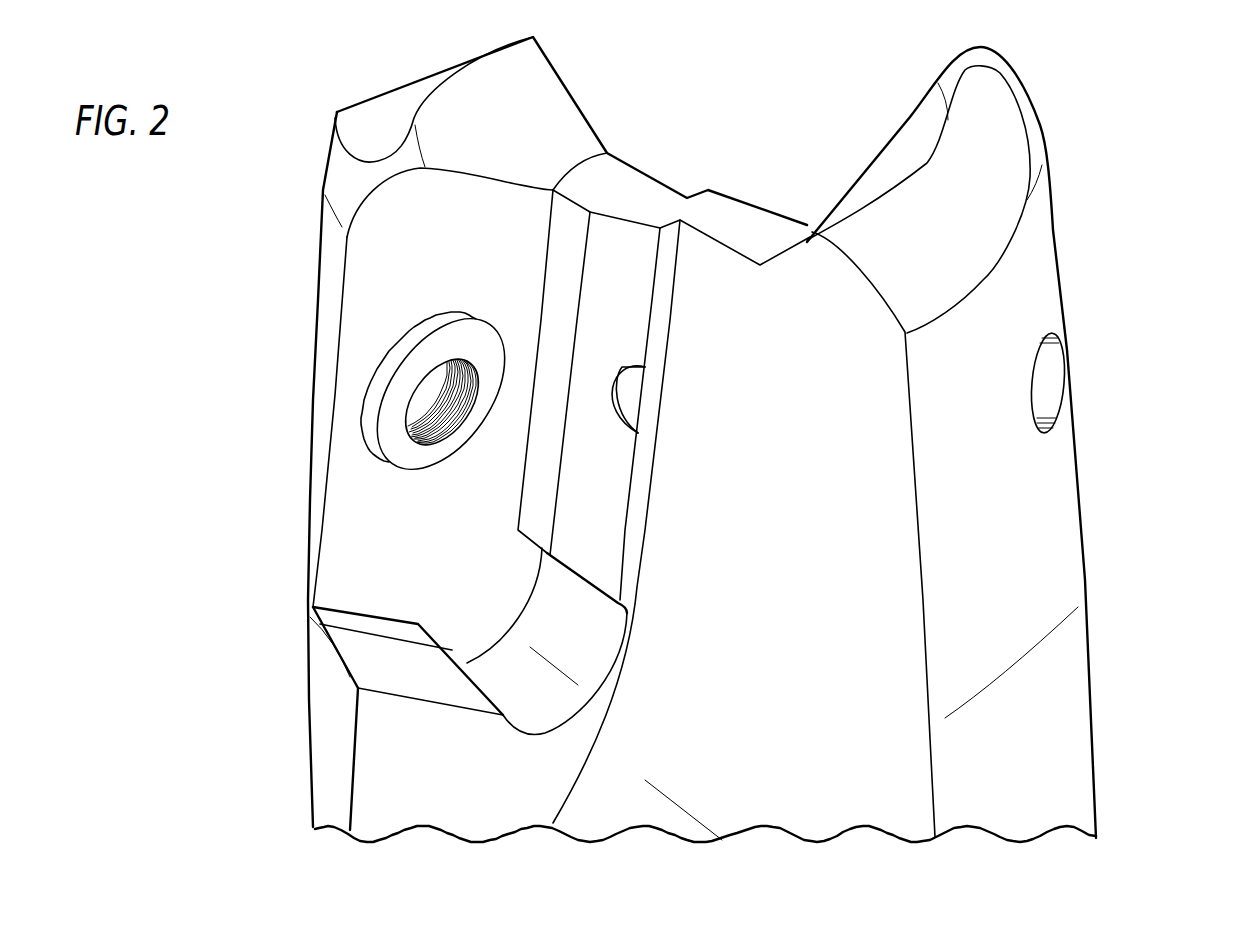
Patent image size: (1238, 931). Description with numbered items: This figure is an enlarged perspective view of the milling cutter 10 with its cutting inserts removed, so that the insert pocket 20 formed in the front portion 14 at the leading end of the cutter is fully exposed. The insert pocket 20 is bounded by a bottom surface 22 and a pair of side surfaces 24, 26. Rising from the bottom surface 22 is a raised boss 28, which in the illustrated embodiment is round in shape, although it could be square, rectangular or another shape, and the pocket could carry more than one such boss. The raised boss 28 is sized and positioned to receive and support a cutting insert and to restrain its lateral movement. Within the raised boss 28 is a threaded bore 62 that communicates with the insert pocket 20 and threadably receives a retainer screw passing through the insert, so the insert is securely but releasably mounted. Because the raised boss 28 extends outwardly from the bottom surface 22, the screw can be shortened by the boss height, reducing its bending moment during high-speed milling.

The milling cutter 10 is at (1162, 89).
The front portion 14 is at (1068, 755).
The insert pocket 20 is at (328, 353).
The bottom surface 22 is at (383, 242).
The side surface 24 is at (372, 653).
The side surface 26 is at (622, 243).
The raised boss 28 is at (373, 412).
The threaded bore 62 is at (443, 407).